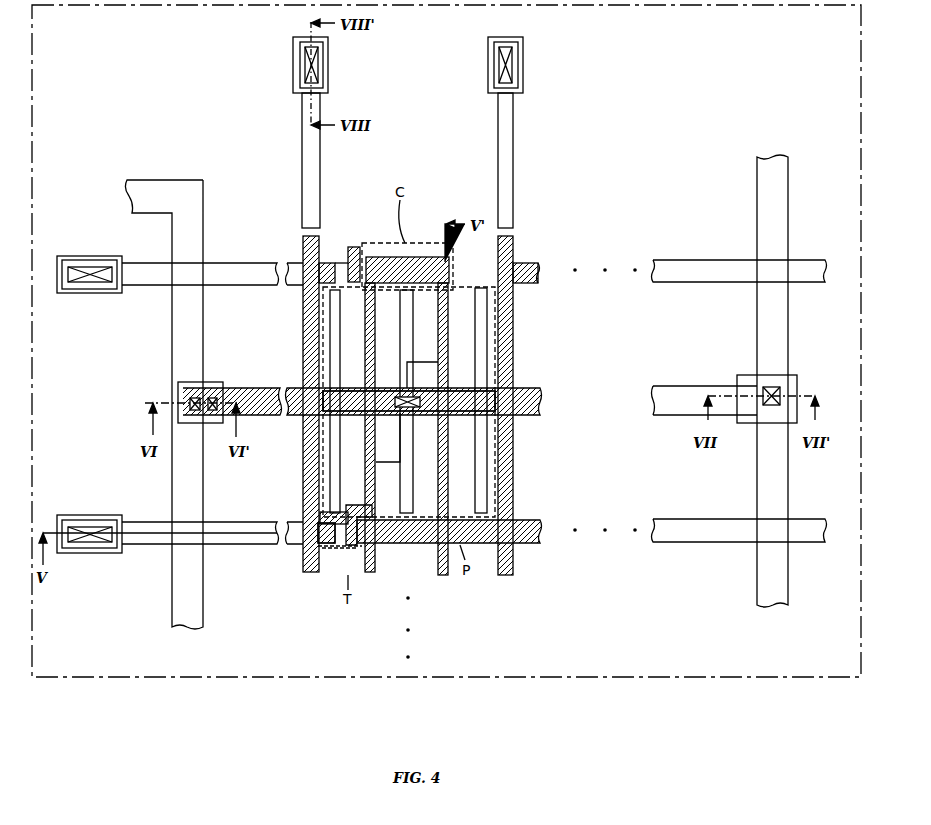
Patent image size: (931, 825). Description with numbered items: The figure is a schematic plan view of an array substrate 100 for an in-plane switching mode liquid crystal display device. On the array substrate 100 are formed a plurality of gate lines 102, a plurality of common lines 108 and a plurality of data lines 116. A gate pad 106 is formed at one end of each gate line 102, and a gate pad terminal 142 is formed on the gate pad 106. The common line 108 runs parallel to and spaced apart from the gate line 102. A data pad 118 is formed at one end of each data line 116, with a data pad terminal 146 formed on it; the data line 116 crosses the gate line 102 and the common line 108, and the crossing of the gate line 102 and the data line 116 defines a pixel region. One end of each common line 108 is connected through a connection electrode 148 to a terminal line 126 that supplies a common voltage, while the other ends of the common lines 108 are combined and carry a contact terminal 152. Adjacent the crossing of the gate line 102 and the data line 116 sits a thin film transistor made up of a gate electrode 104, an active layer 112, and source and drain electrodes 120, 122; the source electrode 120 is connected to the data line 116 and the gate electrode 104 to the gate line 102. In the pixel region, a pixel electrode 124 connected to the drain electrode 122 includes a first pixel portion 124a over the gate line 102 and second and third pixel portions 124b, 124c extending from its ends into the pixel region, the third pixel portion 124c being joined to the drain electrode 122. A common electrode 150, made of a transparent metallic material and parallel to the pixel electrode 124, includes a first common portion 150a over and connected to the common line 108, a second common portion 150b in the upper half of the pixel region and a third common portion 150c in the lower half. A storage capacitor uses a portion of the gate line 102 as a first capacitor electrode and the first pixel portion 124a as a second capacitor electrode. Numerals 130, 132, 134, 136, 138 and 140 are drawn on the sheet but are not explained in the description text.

The array substrate 100 is at (777, 678).
The gate line 102 is at (247, 255).
The gate electrode 104 is at (325, 513).
The gate pad 106 is at (113, 259).
The common line 108 is at (258, 388).
The active layer 112 is at (337, 545).
The data line 116 is at (303, 305).
The data pad 118 is at (325, 73).
The source electrode 120 is at (312, 560).
The drain electrode 122 is at (356, 548).
The pixel electrode 124 is at (470, 411).
The first pixel portion 124a is at (450, 270).
The second pixel portion 124b is at (375, 335).
The third pixel portion 124c is at (405, 352).
The terminal line 126 is at (172, 365).
The gate pad 130 is at (95, 548).
The data pad 132 is at (305, 55).
The contact hole 134 is at (210, 425).
The contact hole 136 is at (193, 425).
The contact hole 138 is at (415, 413).
The contact hole 140 is at (770, 388).
The gate pad terminal 142 is at (85, 257).
The data pad terminal 146 is at (329, 46).
The connection electrode 148 is at (213, 388).
The common electrode 150 is at (482, 402).
The first common portion 150a is at (540, 397).
The second common portion 150b is at (488, 369).
The third common portion 150c is at (597, 365).
The contact terminal 152 is at (743, 423).